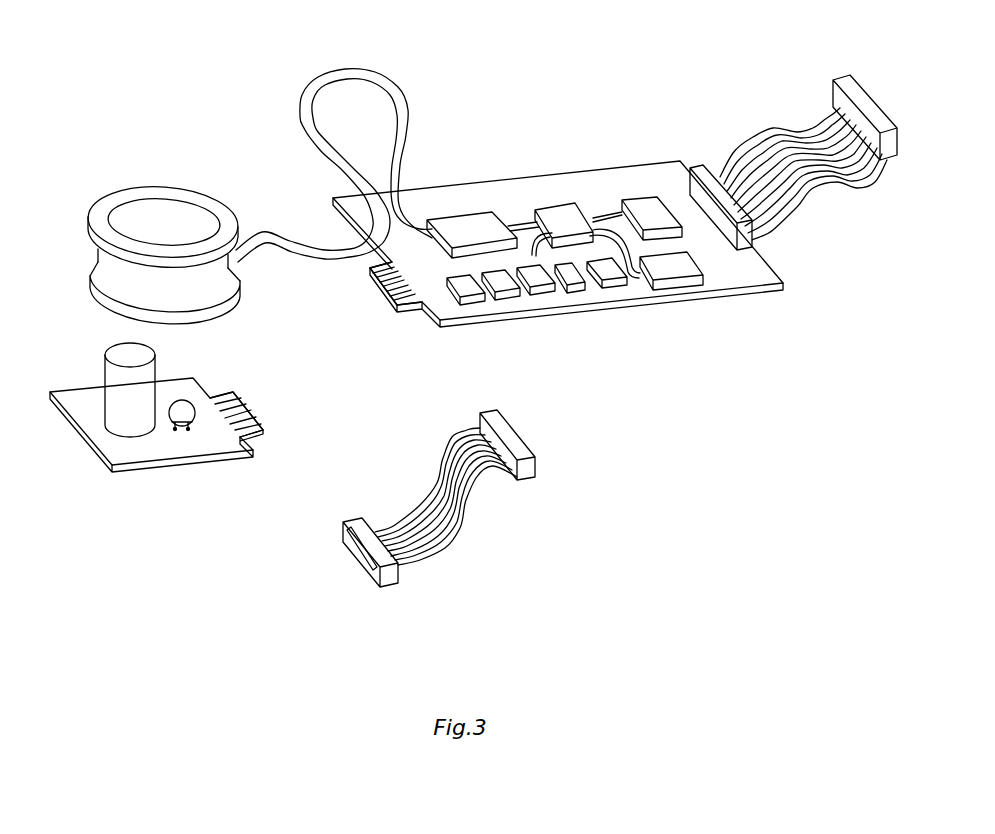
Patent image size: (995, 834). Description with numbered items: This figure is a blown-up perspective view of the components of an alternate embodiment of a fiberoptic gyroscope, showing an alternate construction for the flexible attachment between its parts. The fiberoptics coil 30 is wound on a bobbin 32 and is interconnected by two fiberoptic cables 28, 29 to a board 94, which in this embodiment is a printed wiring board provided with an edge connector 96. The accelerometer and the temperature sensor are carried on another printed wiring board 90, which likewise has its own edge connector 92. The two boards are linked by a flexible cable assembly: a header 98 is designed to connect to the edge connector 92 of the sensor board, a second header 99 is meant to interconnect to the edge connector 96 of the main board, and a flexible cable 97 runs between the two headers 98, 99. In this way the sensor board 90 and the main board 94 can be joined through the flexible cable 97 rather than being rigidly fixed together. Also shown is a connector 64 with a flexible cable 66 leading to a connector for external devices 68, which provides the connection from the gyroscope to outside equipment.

The fiberoptic cable 28 is at (334, 133).
The fiberoptic cable 29 is at (347, 70).
The fiberoptics coil 30 is at (135, 227).
The bobbin 32 is at (130, 190).
The connector 64 is at (692, 165).
The flexible cable 66 is at (770, 127).
The connector for external devices 68 is at (865, 90).
The printed wiring board 90 is at (191, 439).
The edge connector 92 is at (245, 398).
The board 94 is at (544, 238).
The edge connector 96 is at (386, 291).
The flexible cable 97 is at (468, 520).
The header 98 is at (398, 580).
The header 99 is at (528, 478).